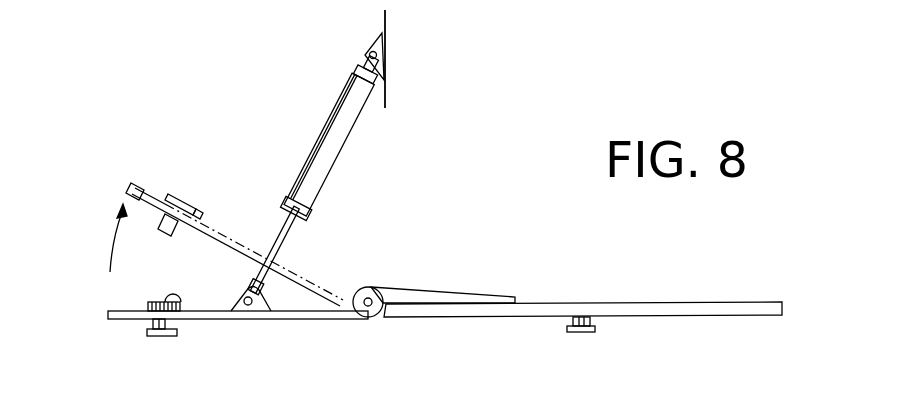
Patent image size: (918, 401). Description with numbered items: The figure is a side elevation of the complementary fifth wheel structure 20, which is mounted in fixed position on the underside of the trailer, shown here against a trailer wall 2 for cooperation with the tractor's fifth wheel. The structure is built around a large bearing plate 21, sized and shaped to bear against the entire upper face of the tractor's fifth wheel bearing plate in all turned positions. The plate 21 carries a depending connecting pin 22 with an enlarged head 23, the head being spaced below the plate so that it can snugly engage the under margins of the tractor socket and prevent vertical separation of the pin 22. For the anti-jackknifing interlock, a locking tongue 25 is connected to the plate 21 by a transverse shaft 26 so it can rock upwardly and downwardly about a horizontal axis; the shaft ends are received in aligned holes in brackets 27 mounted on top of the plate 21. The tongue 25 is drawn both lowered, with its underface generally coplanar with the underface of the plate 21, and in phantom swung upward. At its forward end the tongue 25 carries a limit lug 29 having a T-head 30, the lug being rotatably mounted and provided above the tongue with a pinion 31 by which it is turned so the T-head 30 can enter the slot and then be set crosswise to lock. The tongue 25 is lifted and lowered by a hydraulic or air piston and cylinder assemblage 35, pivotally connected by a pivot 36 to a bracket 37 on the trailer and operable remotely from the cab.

The wall / vertical support 2 is at (402, 83).
The complementary fifth wheel structure 20 is at (610, 315).
The bearing plate 21 is at (650, 306).
The connecting pin 22 is at (593, 320).
The enlarged head 23 is at (577, 332).
The locking tongue 25 is at (133, 188).
The transverse shaft 26 is at (372, 297).
The brackets 27 is at (437, 295).
The limit lug 29 is at (157, 322).
The T-head 30 is at (175, 333).
The pinion 31 is at (152, 298).
The piston and cylinder assemblage 35 is at (321, 117).
The pivot 36 is at (364, 56).
The bracket 37 is at (374, 43).